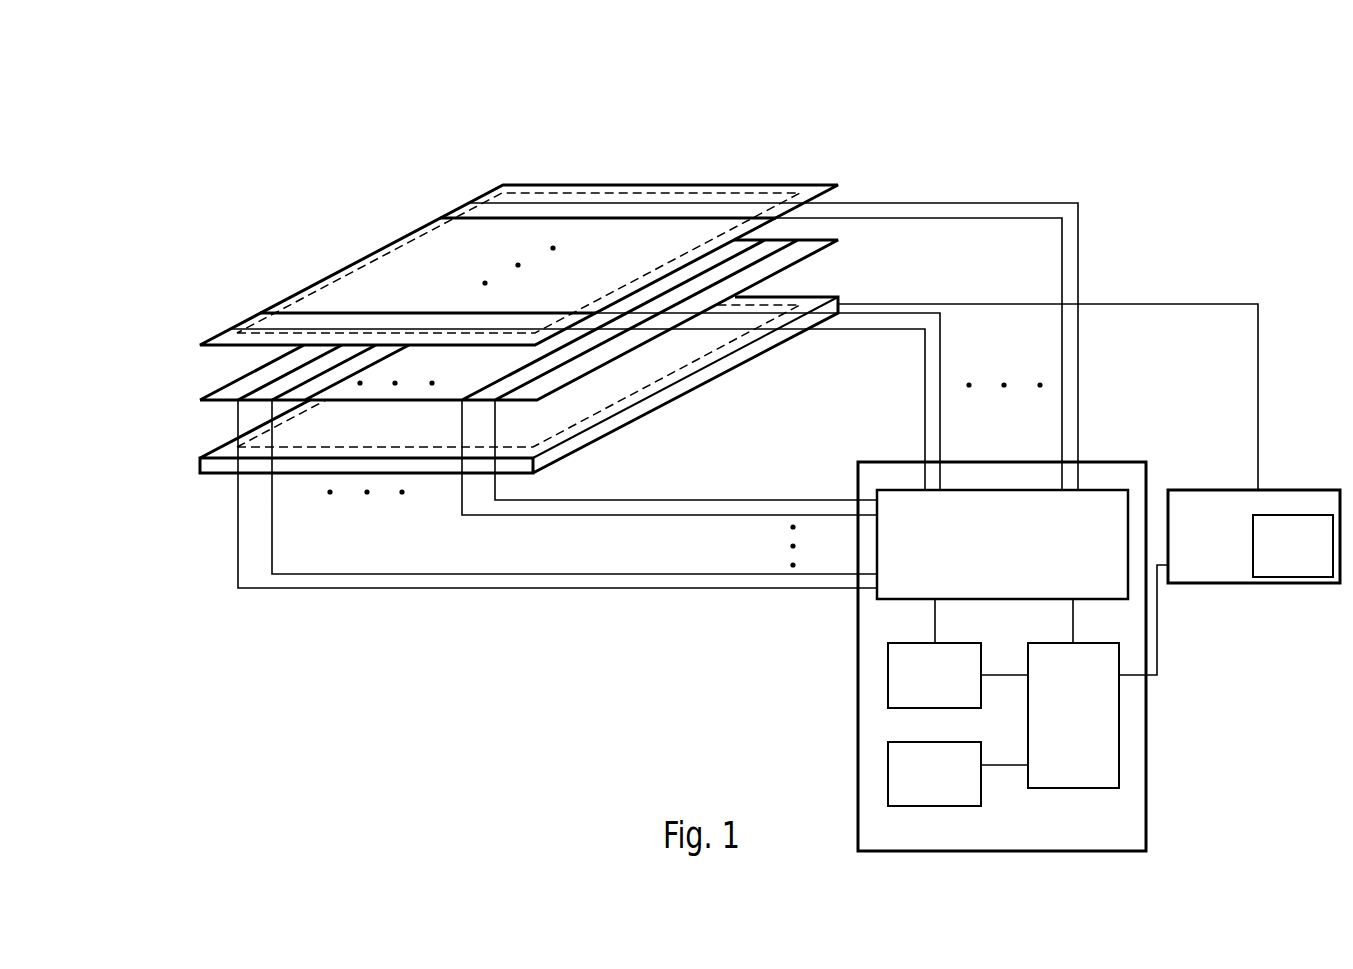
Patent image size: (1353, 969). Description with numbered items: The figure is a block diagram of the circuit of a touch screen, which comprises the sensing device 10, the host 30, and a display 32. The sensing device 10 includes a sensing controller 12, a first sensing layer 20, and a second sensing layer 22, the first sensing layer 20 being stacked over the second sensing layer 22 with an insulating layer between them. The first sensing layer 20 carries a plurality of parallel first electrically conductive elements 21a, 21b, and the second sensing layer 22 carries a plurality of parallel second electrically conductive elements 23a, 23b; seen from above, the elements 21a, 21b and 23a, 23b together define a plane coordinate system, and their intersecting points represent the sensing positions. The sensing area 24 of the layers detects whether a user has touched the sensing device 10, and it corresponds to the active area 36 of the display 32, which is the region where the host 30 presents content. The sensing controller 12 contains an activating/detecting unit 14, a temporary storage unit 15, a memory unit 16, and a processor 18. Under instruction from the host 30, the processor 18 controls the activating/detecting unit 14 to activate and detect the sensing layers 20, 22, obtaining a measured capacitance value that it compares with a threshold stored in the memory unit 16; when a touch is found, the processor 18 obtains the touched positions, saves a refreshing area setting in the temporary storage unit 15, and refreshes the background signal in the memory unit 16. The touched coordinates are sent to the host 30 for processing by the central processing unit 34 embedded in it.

The sensing device 10 is at (1163, 103).
The sensing controller 12 is at (1110, 460).
The activating/detecting unit 14 is at (895, 599).
The temporary storage unit 15 is at (888, 675).
The memory unit 16 is at (888, 773).
The processor 18 is at (1119, 690).
The first sensing layer 20 is at (800, 185).
The first electrically conductive element 21a is at (588, 203).
The first electrically conductive element 21b is at (527, 218).
The second sensing layer 22 is at (827, 237).
The second electrically conductive element 23a is at (240, 392).
The second electrically conductive element 23b is at (320, 370).
The sensing area 24 is at (653, 195).
The host 30 is at (1198, 490).
The display 32 is at (218, 447).
The central processing unit 34 is at (1290, 515).
The active area 36 is at (257, 448).